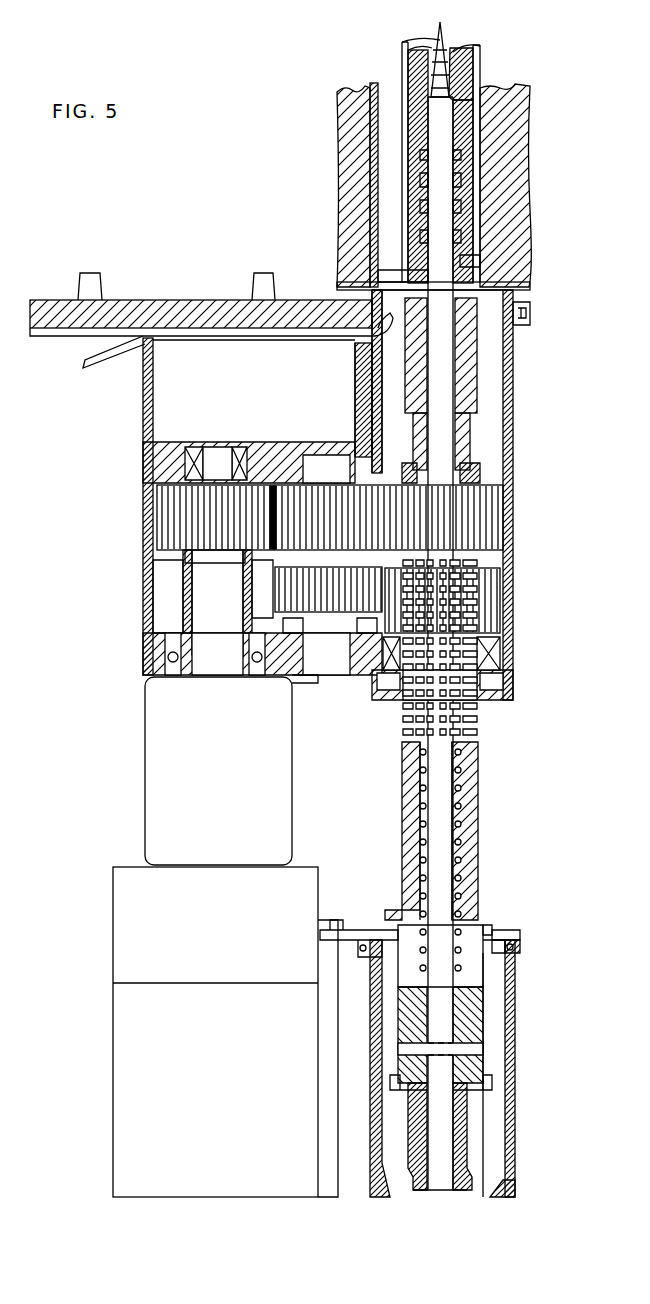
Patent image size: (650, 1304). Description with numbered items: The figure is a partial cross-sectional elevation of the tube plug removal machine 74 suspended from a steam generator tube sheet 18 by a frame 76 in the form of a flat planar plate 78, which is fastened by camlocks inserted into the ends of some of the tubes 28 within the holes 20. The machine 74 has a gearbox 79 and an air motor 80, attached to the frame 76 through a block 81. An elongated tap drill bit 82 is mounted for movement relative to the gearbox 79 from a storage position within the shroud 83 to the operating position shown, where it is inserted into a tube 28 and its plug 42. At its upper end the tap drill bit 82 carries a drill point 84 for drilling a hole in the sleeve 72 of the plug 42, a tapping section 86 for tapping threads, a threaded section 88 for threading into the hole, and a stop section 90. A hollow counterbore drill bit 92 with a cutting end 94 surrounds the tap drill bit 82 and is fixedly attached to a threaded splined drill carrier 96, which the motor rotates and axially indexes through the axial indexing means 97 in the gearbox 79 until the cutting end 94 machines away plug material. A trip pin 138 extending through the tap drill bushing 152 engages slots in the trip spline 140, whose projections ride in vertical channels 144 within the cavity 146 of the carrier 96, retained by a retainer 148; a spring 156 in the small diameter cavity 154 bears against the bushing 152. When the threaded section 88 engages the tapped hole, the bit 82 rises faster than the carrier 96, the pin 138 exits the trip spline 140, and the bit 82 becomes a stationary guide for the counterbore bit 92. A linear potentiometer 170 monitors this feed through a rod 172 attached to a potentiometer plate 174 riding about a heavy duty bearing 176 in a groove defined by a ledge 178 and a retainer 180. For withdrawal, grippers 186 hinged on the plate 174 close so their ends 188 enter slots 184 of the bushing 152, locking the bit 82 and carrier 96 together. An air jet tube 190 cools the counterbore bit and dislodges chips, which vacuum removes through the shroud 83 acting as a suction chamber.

The tube sheet 18 is at (325, 256).
The holes 20 is at (500, 88).
The tubes 28 is at (520, 150).
The plug 42 is at (473, 260).
The sleeve 72 is at (413, 72).
The tube plug removal machine 74 is at (145, 813).
The frame 76 is at (178, 300).
The planar plate 78 is at (78, 332).
The gearbox 79 is at (143, 598).
The air motor 80 is at (222, 1140).
The block 81 is at (145, 425).
The tap drill bit 82 is at (443, 228).
The shroud 83 is at (510, 440).
The drill point 84 is at (444, 30).
The tapping section 86 is at (430, 50).
The threaded section 88 is at (447, 77).
The stop section 90 is at (457, 108).
The counterbore drill bit 92 is at (475, 395).
The cutting end 94 is at (467, 302).
The splined drill carrier 96 is at (410, 762).
The axial indexing means 97 is at (512, 527).
The trip pin 138 is at (480, 1052).
The trip spline 140 is at (483, 1018).
The vertical channels 144 is at (486, 925).
The cavity 146 is at (473, 920).
The retainer 148 is at (480, 1090).
The tap drill bushing 152 is at (465, 1145).
The small diameter cavity 154 is at (470, 782).
The spring 156 is at (462, 818).
The linear potentiometer 170 is at (332, 1190).
The rod 172 is at (333, 925).
The potentiometer plate 174 is at (320, 945).
The heavy duty bearing 176 is at (512, 950).
The ledge 178 is at (508, 955).
The retainer 180 is at (500, 925).
The slots 184 is at (470, 1168).
The grippers 186 is at (512, 1130).
The ends 188 is at (500, 1180).
The air jet tube 190 is at (90, 372).